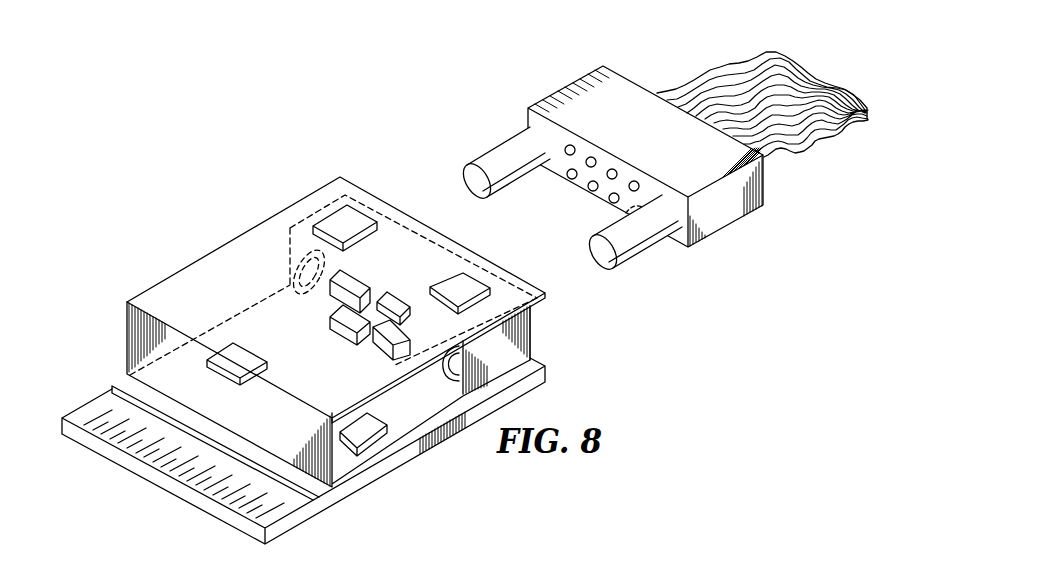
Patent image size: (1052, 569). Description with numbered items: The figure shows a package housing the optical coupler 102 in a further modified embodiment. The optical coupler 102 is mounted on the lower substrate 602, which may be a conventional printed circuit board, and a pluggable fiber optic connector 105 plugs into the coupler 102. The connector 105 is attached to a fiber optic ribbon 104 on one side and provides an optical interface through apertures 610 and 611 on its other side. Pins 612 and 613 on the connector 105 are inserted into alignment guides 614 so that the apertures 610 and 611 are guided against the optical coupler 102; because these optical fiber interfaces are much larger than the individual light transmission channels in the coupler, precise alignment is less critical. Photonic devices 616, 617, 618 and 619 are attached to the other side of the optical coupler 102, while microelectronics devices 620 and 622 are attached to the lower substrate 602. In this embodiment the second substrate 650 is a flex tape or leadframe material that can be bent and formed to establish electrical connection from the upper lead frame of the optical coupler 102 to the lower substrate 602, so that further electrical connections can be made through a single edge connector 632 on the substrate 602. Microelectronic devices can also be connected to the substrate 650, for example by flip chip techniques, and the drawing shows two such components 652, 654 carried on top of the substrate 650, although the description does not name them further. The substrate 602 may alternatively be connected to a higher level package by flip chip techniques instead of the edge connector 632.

The optical coupler 102 is at (520, 352).
The fiber optic ribbon 104 is at (736, 63).
The pluggable fiber optic connector 105 is at (600, 82).
The lower substrate 602 is at (150, 470).
The aperture 610 is at (590, 191).
The aperture 611 is at (617, 172).
The pin 612 is at (505, 148).
The pin 613 is at (595, 260).
The alignment guide 614 is at (292, 262).
The photonic device 616 is at (345, 332).
The photonic device 617 is at (305, 318).
The photonic device 618 is at (382, 368).
The photonic device 619 is at (403, 290).
The microelectronics device 620 is at (372, 440).
The microelectronics device 622 is at (235, 342).
The edge connector 632 is at (96, 426).
The second substrate 650 is at (190, 283).
The electronic component 652 is at (340, 224).
The electronic component 654 is at (460, 298).